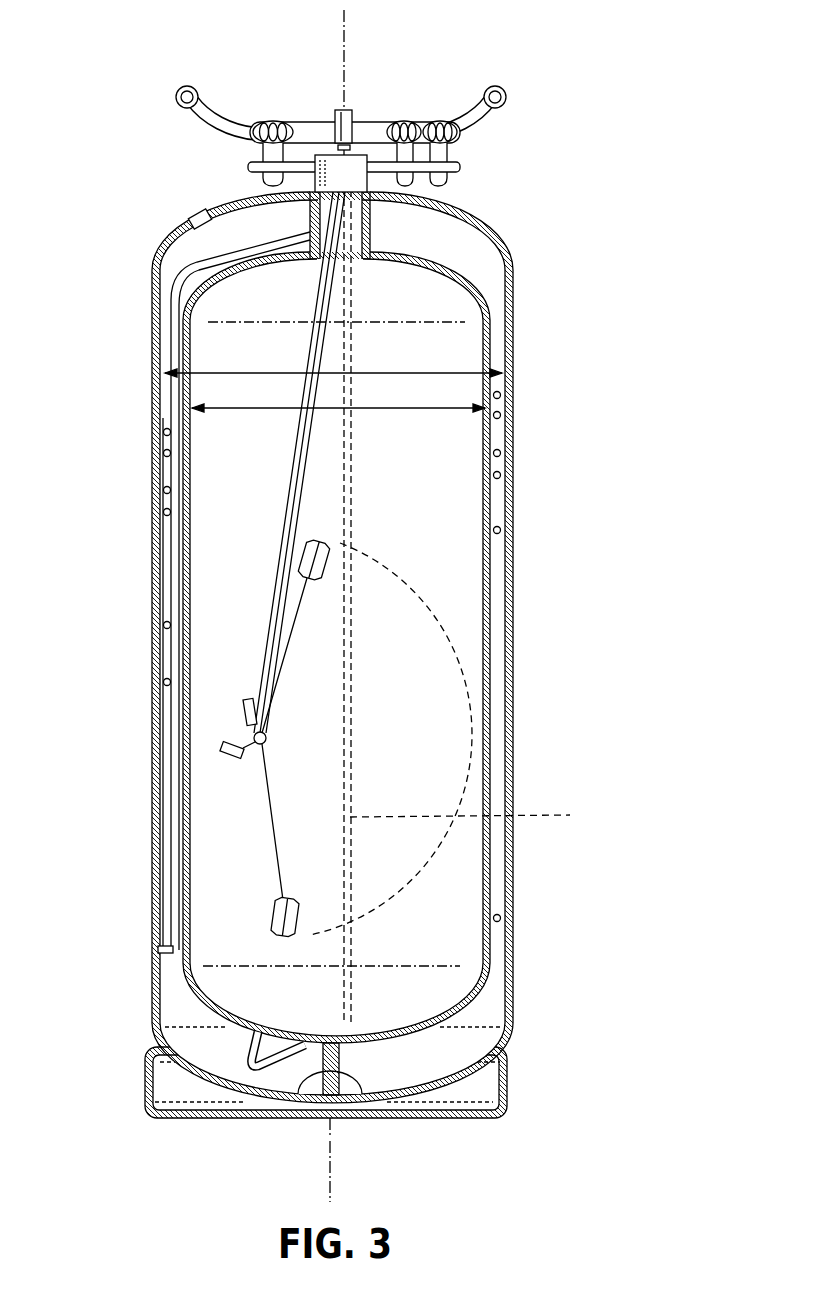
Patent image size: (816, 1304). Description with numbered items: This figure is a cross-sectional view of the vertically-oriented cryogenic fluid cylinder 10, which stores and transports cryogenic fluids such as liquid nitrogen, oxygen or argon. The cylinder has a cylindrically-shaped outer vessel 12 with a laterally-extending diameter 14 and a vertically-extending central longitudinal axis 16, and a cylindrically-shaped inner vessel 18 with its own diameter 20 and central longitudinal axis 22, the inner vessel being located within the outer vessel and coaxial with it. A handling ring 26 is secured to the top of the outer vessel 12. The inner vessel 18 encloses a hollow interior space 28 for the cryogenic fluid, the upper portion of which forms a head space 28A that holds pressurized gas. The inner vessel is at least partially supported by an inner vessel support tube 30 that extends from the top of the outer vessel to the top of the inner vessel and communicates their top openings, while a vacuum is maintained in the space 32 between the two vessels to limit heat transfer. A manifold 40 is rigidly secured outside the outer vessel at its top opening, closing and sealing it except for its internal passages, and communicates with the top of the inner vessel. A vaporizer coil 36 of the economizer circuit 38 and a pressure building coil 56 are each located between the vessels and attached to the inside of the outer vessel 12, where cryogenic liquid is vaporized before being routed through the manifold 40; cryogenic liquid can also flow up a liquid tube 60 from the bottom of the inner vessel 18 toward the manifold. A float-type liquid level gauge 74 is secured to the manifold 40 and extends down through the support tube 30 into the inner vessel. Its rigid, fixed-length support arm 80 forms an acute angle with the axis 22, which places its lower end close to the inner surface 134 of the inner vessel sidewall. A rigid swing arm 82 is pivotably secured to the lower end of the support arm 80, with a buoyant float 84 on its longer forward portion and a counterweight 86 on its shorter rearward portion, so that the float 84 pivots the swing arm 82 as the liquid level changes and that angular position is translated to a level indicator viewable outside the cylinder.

The cryogenic fluid cylinder 10 is at (597, 62).
The outer vessel 12 is at (513, 600).
The diameter of the outer vessel 14 is at (400, 373).
The central longitudinal axis of the outer vessel 16 is at (335, 1162).
The inner vessel 18 is at (488, 727).
The diameter of the inner vessel 20 is at (397, 408).
The central longitudinal axis of the inner vessel 22 is at (330, 1122).
The handling ring 26 is at (493, 88).
The interior space 28 is at (418, 1006).
The head space 28A is at (427, 308).
The inner vessel support tube 30 is at (373, 230).
The space 32 is at (498, 552).
The vaporizer coil 36 is at (165, 683).
The economizer circuit 38 is at (150, 574).
The manifold 40 is at (418, 188).
The pressure building coil 56 is at (250, 1067).
The liquid tube 60 is at (456, 739).
The liquid level gauge 74 is at (286, 432).
The support arm 80 is at (302, 462).
The swing arm 82 is at (268, 820).
The float 84 is at (270, 912).
The counterweight 86 is at (240, 713).
The inner surface of the sidewall of the inner vessel 134 is at (180, 782).